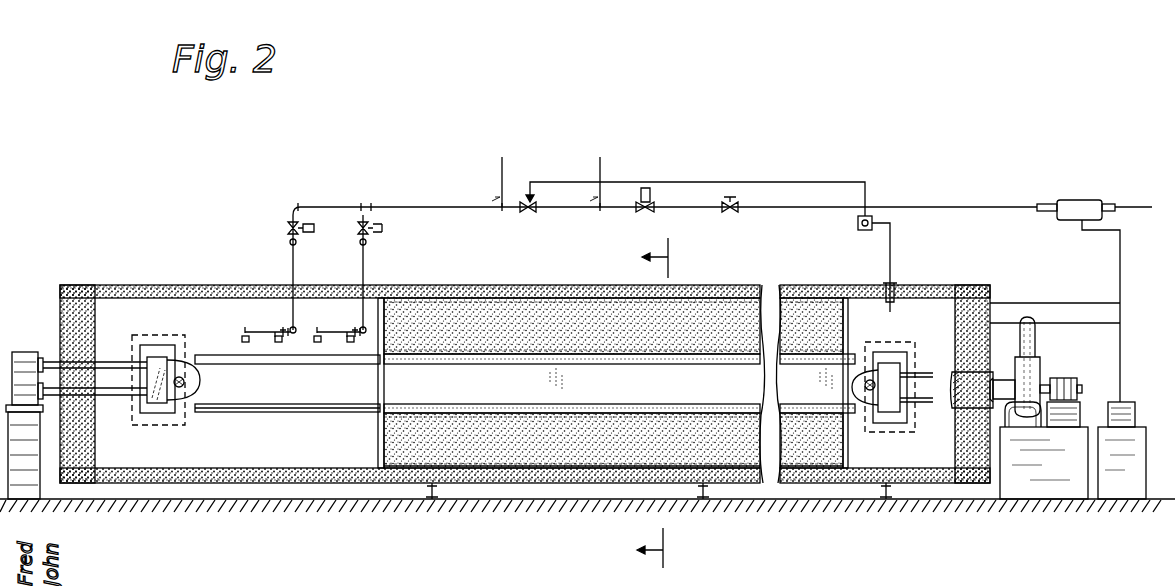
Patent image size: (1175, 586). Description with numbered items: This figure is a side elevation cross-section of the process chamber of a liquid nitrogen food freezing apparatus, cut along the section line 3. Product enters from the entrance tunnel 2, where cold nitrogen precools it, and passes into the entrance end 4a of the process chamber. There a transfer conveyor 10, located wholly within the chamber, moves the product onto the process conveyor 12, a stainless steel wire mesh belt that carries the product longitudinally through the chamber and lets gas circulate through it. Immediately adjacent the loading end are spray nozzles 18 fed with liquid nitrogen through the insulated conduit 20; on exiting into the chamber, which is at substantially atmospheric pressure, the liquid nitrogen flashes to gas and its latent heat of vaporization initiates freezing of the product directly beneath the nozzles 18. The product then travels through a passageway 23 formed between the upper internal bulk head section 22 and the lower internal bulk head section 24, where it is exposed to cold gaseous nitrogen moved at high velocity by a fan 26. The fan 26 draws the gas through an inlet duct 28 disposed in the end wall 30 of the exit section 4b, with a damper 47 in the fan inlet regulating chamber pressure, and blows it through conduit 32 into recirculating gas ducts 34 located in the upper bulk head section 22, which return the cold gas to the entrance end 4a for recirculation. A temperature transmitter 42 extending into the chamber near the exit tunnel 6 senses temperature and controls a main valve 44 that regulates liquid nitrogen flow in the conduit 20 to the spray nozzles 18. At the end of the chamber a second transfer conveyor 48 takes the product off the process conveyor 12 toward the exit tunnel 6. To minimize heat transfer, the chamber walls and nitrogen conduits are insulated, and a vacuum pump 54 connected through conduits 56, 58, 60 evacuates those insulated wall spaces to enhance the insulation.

The entrance tunnel 2 is at (145, 413).
The section line 3- 3 is at (665, 403).
The entrance end of the process chamber 4a is at (332, 448).
The exit section of the process chamber 4b is at (890, 465).
The exit tunnel 6 is at (907, 415).
The transfer conveyor 10 is at (153, 360).
The process conveyor 12 is at (285, 388).
The spray nozzles 18 is at (270, 332).
The conduit 20 is at (572, 207).
The upper internal bulk head section 22 is at (380, 338).
The passageway 23 is at (377, 410).
The lower internal bulk head section 24 is at (375, 467).
The fan 26 is at (1038, 371).
The inlet duct 28 is at (1007, 372).
The end wall 30 is at (975, 483).
The conduit 32 is at (999, 321).
The recirculating gas ducts 34 is at (445, 310).
The temperature transmitter 42 is at (867, 287).
The main valve 44 is at (528, 194).
The damper 47 is at (952, 392).
The second transfer conveyor 48 is at (893, 346).
The vacuum pump 54 is at (1126, 490).
The conduit 56 is at (1120, 277).
The conduit 58 is at (1062, 325).
The conduit 60 is at (1062, 303).